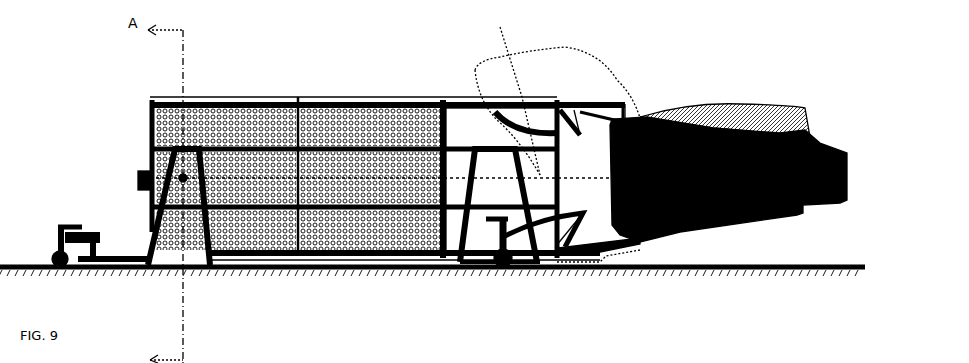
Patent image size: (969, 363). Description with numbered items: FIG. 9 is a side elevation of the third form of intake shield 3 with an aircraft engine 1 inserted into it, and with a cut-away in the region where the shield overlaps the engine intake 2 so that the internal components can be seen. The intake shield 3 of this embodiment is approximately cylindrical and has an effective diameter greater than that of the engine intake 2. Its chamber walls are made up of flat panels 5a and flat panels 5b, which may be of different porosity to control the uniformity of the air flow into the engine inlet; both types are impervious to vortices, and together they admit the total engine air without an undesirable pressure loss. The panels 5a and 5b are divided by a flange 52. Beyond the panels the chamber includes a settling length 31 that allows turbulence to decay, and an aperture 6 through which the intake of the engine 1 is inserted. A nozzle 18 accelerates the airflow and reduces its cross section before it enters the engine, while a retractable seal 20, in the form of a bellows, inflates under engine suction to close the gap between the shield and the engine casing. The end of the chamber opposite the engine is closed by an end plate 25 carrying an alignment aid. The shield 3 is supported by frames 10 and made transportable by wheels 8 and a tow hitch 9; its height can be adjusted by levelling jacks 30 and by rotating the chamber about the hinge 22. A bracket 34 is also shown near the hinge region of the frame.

The aircraft engine 1 is at (760, 108).
The engine intake 2 is at (690, 107).
The intake shield 3 is at (160, 103).
The flat panels 5a is at (253, 100).
The flat panels 5b is at (350, 100).
The aperture 6 is at (650, 108).
The wheels 8 is at (52, 259).
The tow hitch 9 is at (56, 226).
The frames 10 is at (178, 232).
The nozzle 18 is at (533, 123).
The retractable seal 20 is at (610, 104).
The hinge 22 is at (242, 258).
The end plate 25 is at (150, 143).
The levelling jacks 30 is at (498, 232).
The settling length 31 is at (463, 120).
The pivot bracket 34 is at (138, 176).
The flange 52 is at (298, 98).